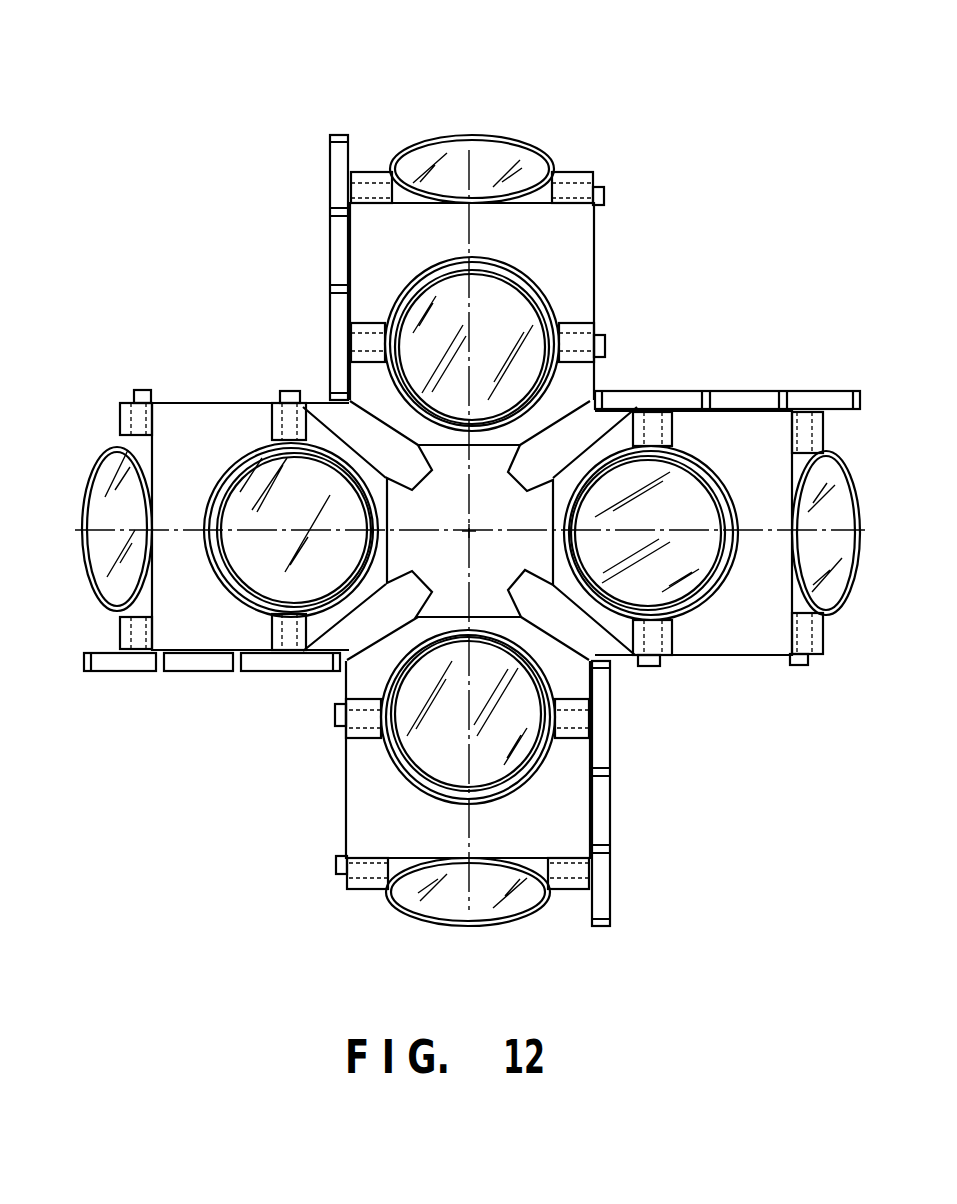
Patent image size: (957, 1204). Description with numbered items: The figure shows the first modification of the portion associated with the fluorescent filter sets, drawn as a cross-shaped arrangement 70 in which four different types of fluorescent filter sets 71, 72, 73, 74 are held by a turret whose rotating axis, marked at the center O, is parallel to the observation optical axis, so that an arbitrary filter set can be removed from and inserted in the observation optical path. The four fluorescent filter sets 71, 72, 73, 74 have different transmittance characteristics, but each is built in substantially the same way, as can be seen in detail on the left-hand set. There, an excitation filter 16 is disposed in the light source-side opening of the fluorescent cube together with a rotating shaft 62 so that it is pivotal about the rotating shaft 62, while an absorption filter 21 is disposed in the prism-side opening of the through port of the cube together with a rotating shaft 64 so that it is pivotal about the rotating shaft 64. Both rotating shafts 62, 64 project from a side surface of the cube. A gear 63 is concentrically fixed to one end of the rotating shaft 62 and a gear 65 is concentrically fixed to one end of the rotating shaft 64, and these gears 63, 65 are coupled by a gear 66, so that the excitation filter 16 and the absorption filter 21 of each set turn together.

The lens unit assembly 70 is at (462, 36).
The fluorescent filter set 72 is at (601, 263).
The fluorescent filter set 71 is at (213, 396).
The absorption filter 21 is at (259, 472).
The rotating shaft 64 is at (288, 389).
The rotating shaft 62 is at (137, 397).
The excitation filter 16 is at (103, 487).
The gear 63 is at (103, 666).
The gear 66 is at (186, 666).
The gear 65 is at (262, 666).
The fluorescent filter set 73 is at (722, 661).
The fluorescent filter set 74 is at (338, 781).
The center point O is at (471, 534).